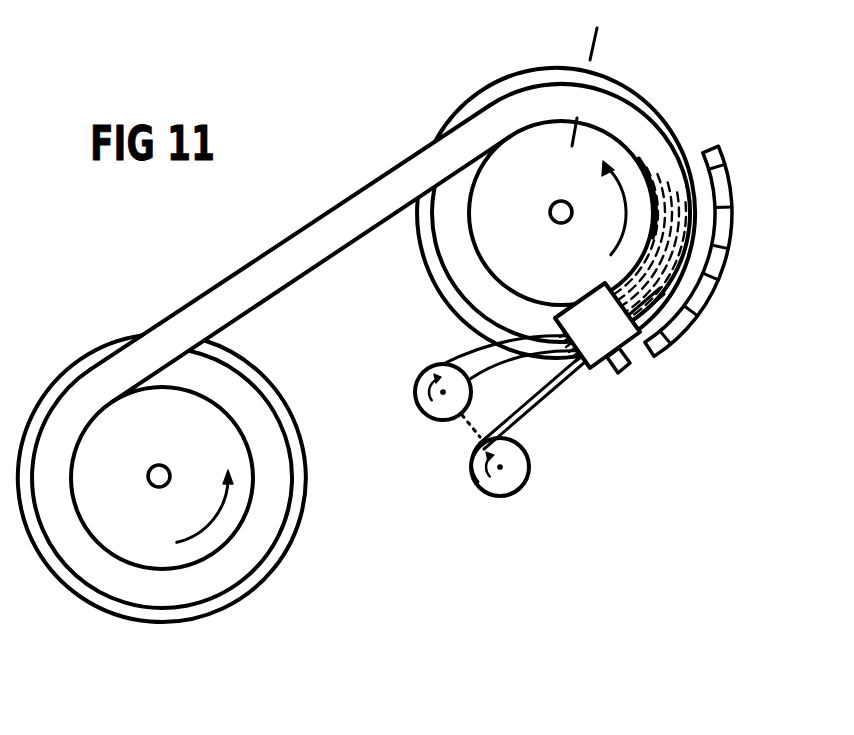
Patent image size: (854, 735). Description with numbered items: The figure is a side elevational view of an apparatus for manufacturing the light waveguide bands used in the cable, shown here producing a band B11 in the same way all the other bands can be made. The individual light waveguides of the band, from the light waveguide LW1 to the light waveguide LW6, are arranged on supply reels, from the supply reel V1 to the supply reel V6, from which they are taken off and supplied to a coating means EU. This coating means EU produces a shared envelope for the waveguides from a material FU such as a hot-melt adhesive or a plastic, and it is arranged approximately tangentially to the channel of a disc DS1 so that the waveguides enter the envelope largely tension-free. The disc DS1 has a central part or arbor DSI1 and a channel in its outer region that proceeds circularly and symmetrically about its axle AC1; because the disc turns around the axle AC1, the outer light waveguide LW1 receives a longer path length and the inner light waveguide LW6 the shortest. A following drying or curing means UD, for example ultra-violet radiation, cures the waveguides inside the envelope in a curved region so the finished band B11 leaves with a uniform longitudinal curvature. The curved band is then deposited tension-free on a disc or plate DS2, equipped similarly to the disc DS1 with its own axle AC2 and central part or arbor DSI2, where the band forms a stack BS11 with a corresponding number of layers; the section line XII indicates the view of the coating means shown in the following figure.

The band B11 is at (627, 122).
The disc DS1 is at (442, 312).
The disc or plate DS2 is at (316, 480).
The central part or arbor DSI1 is at (483, 220).
The central part or arbor DSI2 is at (214, 413).
The axle AC1 is at (556, 205).
The second disk axis AC2 is at (150, 474).
The stack BS11 is at (242, 556).
The drying or curing means UD is at (693, 315).
The coating means EU is at (600, 305).
The material FU is at (634, 391).
The light waveguide LW6 is at (527, 320).
The light waveguide LW1 is at (561, 372).
The supply reel V6 is at (417, 392).
The supply reel V1 is at (518, 482).
The section line XII is at (595, 38).